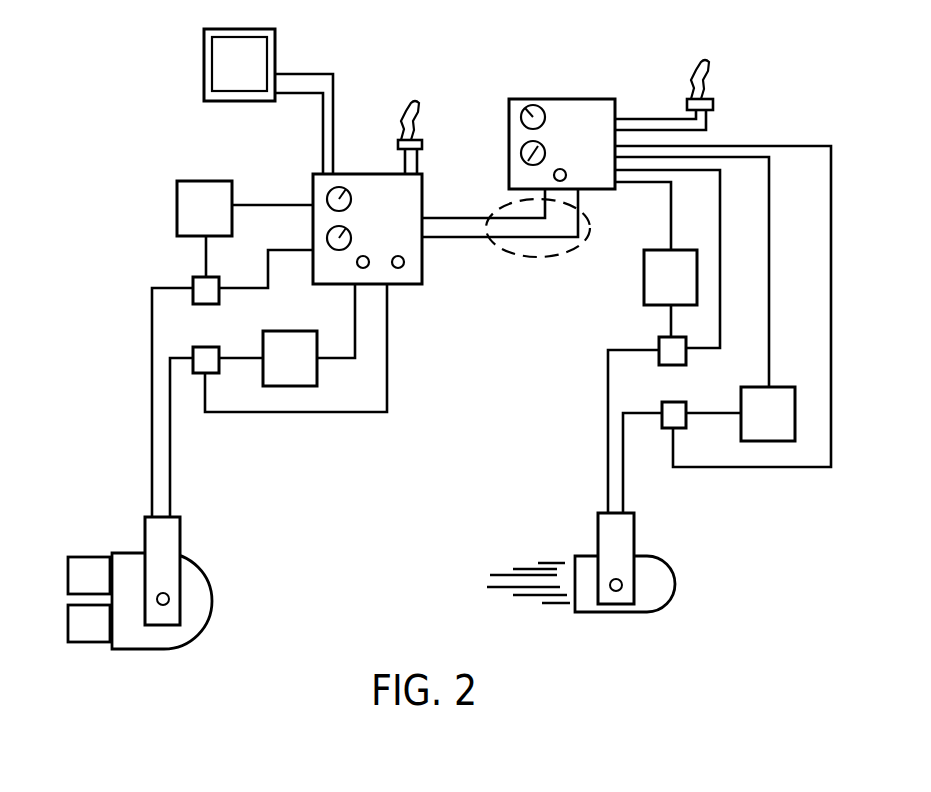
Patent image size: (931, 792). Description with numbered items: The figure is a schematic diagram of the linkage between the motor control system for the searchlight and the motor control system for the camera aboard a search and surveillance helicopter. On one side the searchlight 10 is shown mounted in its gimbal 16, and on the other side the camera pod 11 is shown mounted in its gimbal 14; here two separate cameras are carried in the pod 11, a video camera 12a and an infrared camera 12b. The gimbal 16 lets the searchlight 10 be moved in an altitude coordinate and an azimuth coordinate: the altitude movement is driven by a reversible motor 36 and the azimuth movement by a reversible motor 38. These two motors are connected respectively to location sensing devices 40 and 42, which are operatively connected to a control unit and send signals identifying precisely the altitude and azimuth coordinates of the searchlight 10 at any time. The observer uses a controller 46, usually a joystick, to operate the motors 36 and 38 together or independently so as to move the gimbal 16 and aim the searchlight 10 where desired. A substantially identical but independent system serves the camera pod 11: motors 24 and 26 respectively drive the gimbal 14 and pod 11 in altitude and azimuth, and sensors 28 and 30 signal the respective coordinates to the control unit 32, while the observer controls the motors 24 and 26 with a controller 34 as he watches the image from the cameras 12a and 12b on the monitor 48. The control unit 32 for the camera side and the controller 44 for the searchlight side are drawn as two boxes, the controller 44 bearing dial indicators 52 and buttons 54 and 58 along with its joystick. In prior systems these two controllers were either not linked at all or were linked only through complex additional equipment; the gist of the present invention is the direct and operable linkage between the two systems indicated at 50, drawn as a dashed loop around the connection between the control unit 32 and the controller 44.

The searchlight 10 is at (660, 572).
The camera pod 11 is at (190, 567).
The video camera 12a is at (80, 557).
The infrared camera 12b is at (80, 642).
The gimbal 14 is at (170, 523).
The gimbal 16 is at (612, 535).
The motor 24 is at (282, 331).
The motor 26 is at (202, 181).
The sensor 28 is at (198, 347).
The sensor 30 is at (195, 277).
The control unit 32 is at (423, 242).
The controller 34 is at (420, 122).
The reversible motor 36 is at (777, 387).
The reversible motor 38 is at (644, 265).
The location sensing device 40 is at (673, 402).
The location sensing device 42 is at (659, 343).
The controller 44 is at (555, 98).
The controller 46 is at (711, 82).
The monitor 48 is at (204, 47).
The linkage 50 is at (535, 256).
The dial indicators 52 is at (330, 235).
The control button 54 is at (360, 267).
The control button 58 is at (402, 267).